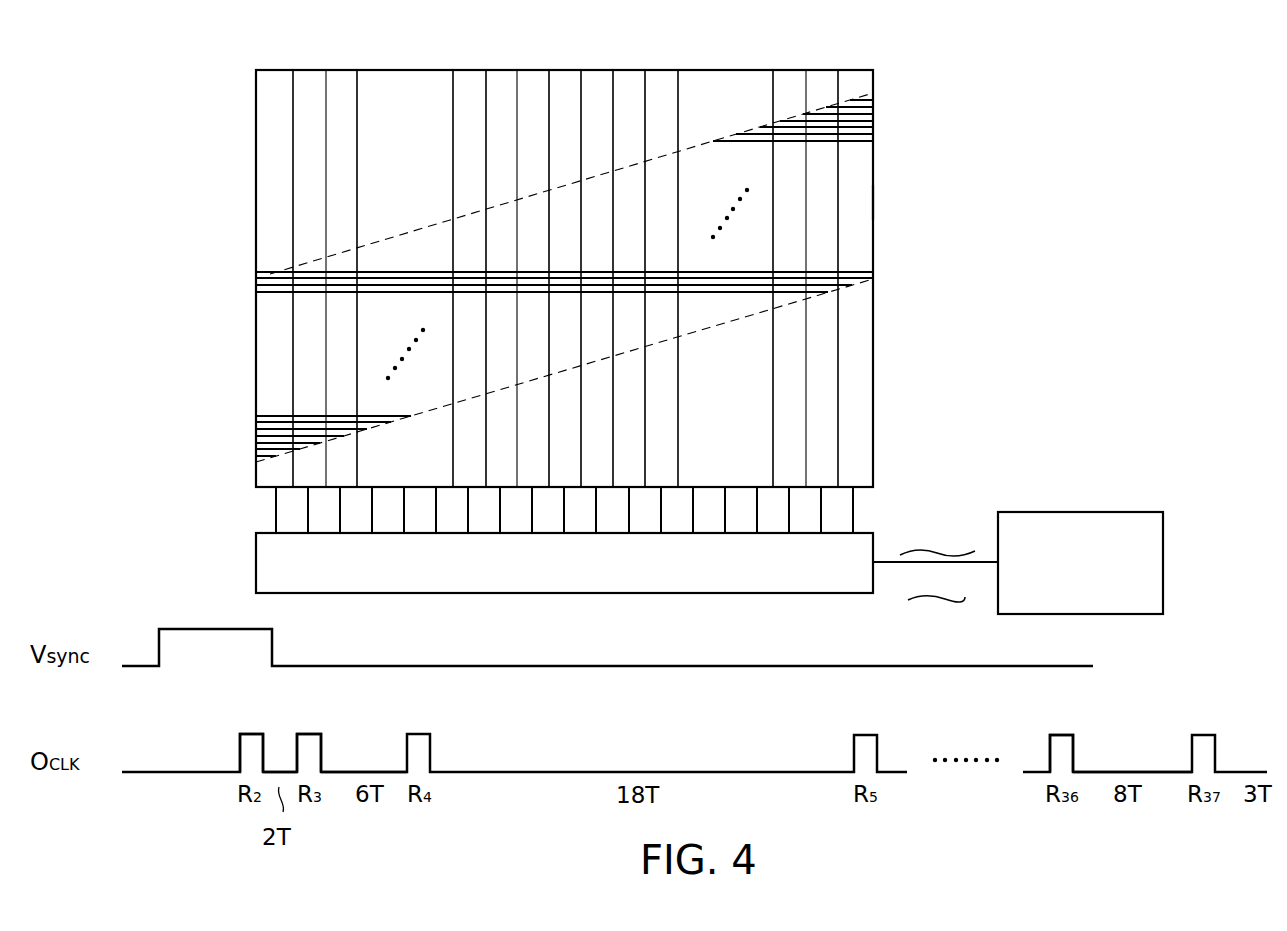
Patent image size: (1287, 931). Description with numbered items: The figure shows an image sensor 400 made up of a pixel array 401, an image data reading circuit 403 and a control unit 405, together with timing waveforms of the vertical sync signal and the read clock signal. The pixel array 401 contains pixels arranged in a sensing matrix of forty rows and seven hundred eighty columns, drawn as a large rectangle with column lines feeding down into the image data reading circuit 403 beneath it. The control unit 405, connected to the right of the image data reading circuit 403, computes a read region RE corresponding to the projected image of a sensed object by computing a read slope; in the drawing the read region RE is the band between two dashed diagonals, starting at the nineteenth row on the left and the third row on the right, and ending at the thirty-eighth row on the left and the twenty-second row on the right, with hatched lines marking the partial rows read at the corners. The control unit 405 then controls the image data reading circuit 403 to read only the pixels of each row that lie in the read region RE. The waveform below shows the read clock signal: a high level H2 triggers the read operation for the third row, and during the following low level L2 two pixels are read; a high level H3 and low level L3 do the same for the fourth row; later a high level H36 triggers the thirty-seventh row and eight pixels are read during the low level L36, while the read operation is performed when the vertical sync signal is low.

The image sensor 400 is at (703, 320).
The pixel array 401 is at (722, 70).
The image data reading circuit 403 is at (256, 565).
The control unit 405 is at (1080, 512).
The read region RE is at (855, 203).
The time interval of high level of read clock signal for third pixel row H2 is at (250, 734).
The time interval of low level of read clock signal for third pixel row L2 is at (282, 762).
The time interval of high level of read clock signal for fourth pixel row H3 is at (309, 734).
The time interval of low level of read clock signal for fourth pixel row L3 is at (392, 762).
The time interval of high level of read clock signal for thirty-seventh pixel row H36 is at (1060, 735).
The time interval of low level of read clock signal for thirty-seventh pixel row L36 is at (1137, 762).